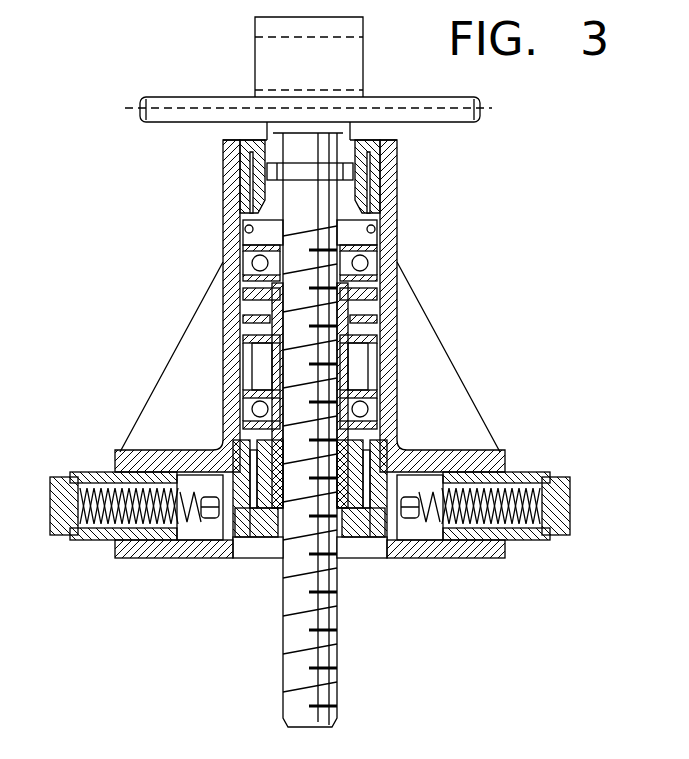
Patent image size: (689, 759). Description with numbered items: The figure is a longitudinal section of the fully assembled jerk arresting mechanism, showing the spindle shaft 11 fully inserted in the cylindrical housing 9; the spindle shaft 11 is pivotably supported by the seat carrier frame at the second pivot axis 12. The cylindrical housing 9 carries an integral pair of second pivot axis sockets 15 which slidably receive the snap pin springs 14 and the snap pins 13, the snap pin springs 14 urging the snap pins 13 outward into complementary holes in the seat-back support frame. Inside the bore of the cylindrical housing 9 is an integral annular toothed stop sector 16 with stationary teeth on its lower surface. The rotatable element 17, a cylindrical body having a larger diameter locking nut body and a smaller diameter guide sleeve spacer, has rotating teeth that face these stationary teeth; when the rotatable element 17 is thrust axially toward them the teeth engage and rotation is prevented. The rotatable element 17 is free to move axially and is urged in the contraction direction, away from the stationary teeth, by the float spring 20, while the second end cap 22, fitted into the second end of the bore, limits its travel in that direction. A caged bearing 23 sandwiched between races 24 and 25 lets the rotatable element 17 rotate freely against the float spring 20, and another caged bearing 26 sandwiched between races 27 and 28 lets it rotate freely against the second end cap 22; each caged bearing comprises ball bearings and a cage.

The cylindrical housing 9 is at (387, 228).
The spindle shaft 11 is at (282, 596).
The second pivot axis 12 is at (190, 103).
The snap pin 13 is at (573, 499).
The snap pin spring 14 is at (537, 540).
The second pivot axis socket 15 is at (437, 560).
The annular toothed stop sector 16 is at (240, 298).
The rotatable element 17 is at (245, 350).
The float spring 20 is at (357, 190).
The second end cap 22 is at (358, 518).
The caged bearing 23 is at (253, 262).
The race 24 is at (248, 236).
The race 25 is at (366, 264).
The caged bearing 26 is at (369, 409).
The race 27 is at (372, 394).
The race 28 is at (378, 428).